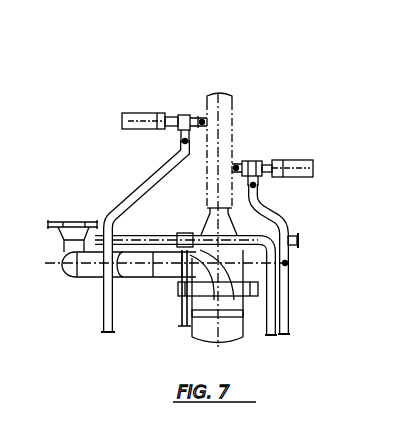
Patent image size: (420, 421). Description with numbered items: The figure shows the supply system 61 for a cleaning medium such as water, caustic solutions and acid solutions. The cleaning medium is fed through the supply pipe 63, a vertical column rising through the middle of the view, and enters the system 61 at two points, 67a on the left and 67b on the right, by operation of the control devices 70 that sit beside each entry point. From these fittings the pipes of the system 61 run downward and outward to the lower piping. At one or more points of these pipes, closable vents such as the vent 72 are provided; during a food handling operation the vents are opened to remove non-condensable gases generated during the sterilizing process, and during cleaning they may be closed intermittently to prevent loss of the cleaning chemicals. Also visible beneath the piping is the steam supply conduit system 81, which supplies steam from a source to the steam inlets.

The supply system 61 is at (135, 185).
The supply pipe 63 is at (223, 100).
The entry point 67a is at (199, 118).
The entry point 67b is at (234, 167).
The control device 70 is at (133, 112).
The closable vent 72 is at (293, 245).
The steam supply conduit system 81 is at (88, 277).